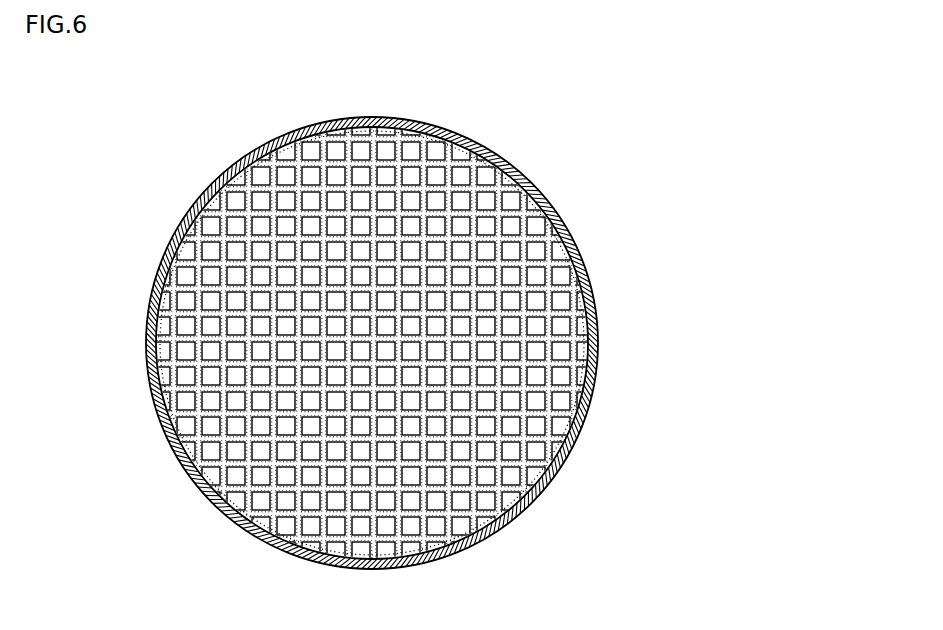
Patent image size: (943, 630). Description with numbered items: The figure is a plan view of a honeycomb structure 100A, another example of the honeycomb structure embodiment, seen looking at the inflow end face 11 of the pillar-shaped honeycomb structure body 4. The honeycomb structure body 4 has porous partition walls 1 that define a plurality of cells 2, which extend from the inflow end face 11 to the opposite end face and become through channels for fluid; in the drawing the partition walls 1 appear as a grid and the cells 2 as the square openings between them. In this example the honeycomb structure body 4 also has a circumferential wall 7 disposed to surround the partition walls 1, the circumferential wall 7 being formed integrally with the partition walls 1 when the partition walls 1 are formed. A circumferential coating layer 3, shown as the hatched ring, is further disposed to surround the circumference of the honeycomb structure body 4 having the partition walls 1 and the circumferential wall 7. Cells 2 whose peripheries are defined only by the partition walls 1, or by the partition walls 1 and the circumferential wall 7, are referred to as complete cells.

The honeycomb structure 100A is at (654, 44).
The inflow end face 11 is at (201, 178).
The porous partition walls 1 is at (402, 187).
The cells 2 is at (337, 172).
The circumferential coating layer 3 is at (568, 232).
The honeycomb structure body 4 is at (584, 417).
The circumferential wall 7 is at (586, 322).